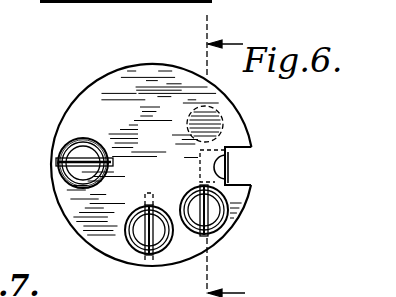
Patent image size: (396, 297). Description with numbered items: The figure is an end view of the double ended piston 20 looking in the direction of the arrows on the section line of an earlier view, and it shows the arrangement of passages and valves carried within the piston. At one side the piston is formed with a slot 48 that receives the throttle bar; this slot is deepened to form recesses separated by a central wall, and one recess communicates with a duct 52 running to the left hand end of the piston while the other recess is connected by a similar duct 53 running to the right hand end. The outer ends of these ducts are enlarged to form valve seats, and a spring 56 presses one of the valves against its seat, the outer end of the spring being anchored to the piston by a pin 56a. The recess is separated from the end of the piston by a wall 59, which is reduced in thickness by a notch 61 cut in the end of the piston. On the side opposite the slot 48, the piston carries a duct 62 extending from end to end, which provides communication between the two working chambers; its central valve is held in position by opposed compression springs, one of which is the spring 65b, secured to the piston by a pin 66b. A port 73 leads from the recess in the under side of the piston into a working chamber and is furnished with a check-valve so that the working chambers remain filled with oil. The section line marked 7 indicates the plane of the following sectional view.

The double ended piston 20 is at (126, 74).
The slot 48 is at (262, 149).
The duct 52 is at (225, 245).
The duct 53 is at (222, 114).
The spring 56 is at (233, 215).
The pin 56a is at (227, 228).
The wall 59 is at (228, 166).
The notch 61 is at (228, 175).
The duct 62 is at (108, 156).
The compression spring 65b is at (87, 139).
The pin 66b is at (64, 181).
The port 73 is at (128, 240).
The section line 7- 7 is at (218, 156).